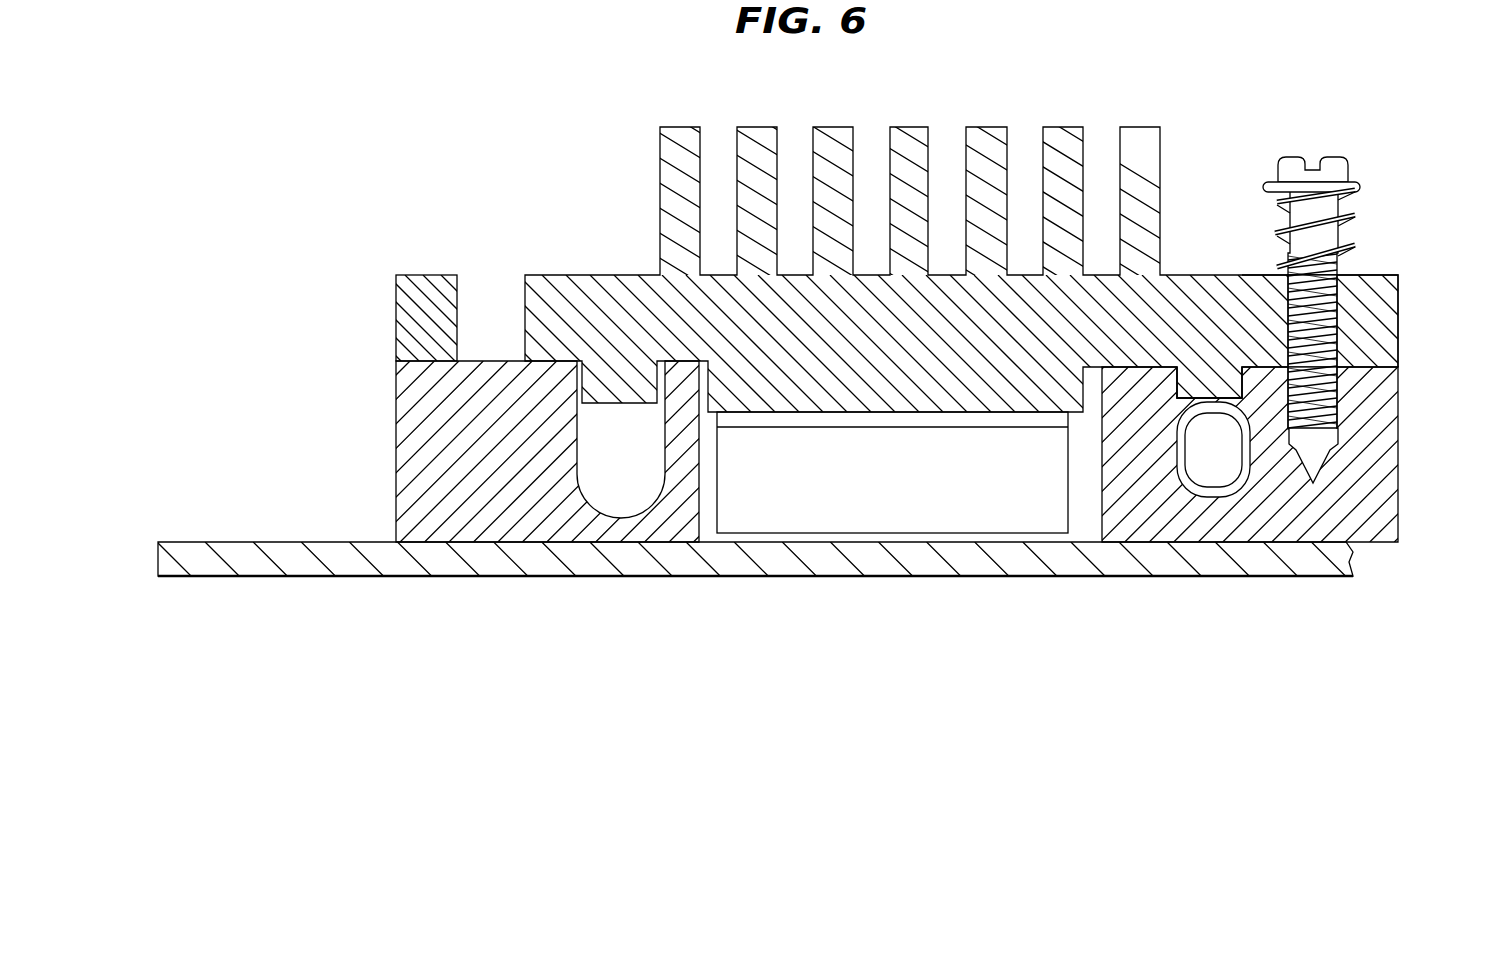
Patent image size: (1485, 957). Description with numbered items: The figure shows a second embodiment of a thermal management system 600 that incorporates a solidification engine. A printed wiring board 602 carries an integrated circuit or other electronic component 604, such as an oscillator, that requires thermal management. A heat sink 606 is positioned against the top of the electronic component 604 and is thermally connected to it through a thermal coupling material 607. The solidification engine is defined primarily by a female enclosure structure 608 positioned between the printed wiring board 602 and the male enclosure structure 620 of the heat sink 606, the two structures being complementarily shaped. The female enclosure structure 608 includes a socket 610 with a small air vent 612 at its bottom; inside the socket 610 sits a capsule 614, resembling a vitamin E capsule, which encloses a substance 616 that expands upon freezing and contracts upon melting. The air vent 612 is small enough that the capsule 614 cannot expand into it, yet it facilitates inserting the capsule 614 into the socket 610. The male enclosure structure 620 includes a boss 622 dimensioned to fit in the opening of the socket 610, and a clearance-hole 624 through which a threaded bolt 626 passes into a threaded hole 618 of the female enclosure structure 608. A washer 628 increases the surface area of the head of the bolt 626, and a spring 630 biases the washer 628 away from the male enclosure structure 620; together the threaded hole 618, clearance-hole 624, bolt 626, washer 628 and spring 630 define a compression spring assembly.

The system 600 is at (324, 243).
The printed wiring board 602 is at (298, 566).
The electronic component 604 is at (915, 510).
The heat sink 606 is at (907, 297).
The thermal coupling material 607 is at (768, 418).
The female enclosure structure 608 is at (1207, 501).
The socket 610 is at (1243, 488).
The air vent 612 is at (1135, 517).
The capsule 614 is at (1222, 490).
The substance 616 is at (1200, 452).
The threaded hole 618 is at (1335, 294).
The male enclosure structure 620 is at (1252, 293).
The boss 622 is at (1208, 372).
The clearance-hole 624 is at (1340, 300).
The threaded bolt 626 is at (1335, 168).
The washer 628 is at (1352, 187).
The spring 630 is at (1282, 228).